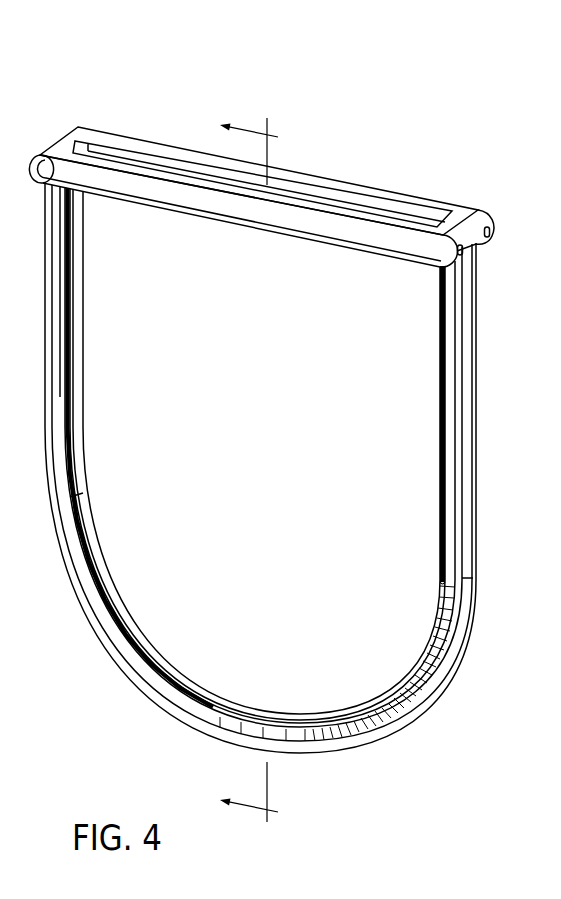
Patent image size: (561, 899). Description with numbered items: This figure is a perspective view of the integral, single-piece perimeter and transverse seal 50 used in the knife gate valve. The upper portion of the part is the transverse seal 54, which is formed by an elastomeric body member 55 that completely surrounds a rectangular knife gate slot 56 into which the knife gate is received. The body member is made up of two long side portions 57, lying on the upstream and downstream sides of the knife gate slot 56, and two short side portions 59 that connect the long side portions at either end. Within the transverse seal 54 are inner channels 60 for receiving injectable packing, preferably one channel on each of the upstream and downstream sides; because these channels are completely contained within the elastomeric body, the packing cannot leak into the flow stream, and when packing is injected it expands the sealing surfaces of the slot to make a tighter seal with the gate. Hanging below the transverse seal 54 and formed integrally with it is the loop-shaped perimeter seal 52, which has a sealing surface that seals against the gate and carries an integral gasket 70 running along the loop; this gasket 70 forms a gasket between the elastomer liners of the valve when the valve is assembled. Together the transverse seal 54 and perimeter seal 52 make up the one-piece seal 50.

The integral perimeter and transverse seal 50 is at (376, 101).
The perimeter seal 52 is at (92, 347).
The transverse seal 54 is at (398, 183).
The elastomeric body member 55 is at (126, 190).
The knife gate slot 56 is at (117, 150).
The long side portions 57 is at (312, 180).
The short side portions 59 is at (72, 141).
The inner channels 60 is at (493, 232).
The integral gasket 70 is at (470, 426).